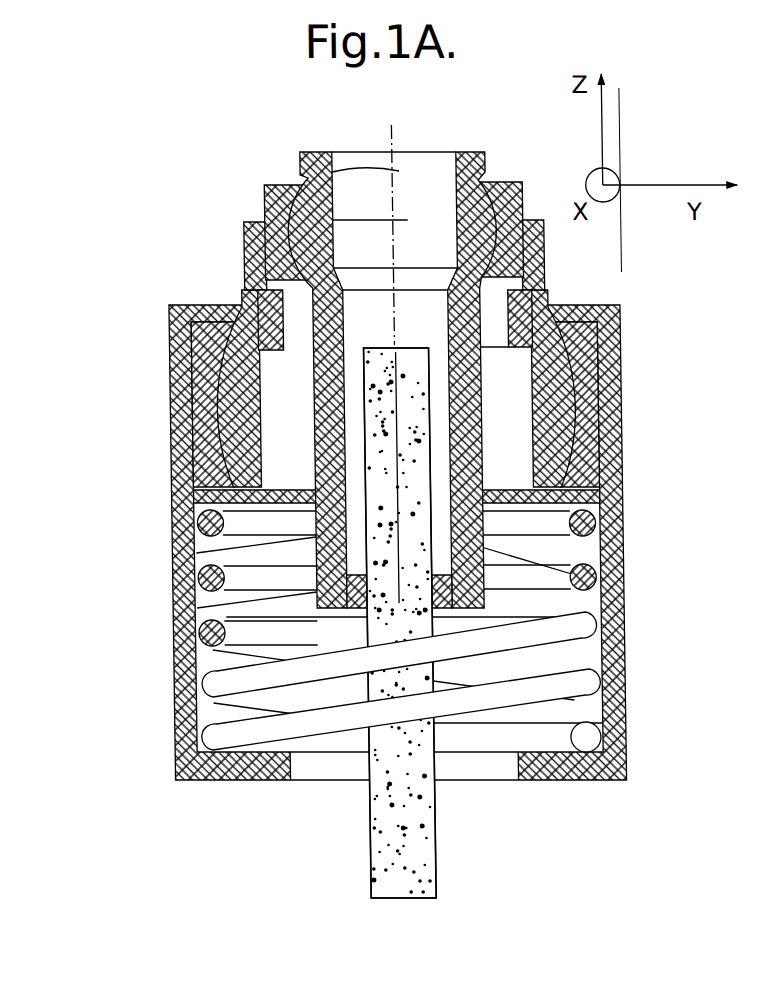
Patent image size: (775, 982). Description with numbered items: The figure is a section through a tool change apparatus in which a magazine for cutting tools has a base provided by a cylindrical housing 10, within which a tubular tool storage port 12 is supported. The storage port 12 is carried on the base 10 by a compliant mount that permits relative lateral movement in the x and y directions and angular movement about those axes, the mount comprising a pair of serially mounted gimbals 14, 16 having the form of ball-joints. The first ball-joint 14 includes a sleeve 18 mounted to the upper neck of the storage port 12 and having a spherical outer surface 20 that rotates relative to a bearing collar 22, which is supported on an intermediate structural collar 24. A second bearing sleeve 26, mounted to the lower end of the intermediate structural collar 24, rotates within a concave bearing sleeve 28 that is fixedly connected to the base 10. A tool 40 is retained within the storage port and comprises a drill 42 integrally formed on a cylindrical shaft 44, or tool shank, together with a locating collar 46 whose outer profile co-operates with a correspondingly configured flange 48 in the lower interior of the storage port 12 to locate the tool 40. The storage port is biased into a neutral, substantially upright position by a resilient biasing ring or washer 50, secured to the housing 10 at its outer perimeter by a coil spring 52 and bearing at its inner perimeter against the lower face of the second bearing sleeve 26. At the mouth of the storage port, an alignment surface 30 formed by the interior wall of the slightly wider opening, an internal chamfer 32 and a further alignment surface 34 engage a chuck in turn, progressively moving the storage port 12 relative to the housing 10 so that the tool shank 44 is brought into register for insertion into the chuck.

The cylindrical housing 10 is at (185, 722).
The tool storage port 12 is at (309, 607).
The gimbal 14 is at (265, 200).
The gimbal 16 is at (207, 442).
The sleeve 18 is at (383, 173).
The spherical outer surface 20 is at (491, 182).
The bearing collar 22 is at (533, 272).
The intermediate structural collar 24 is at (256, 253).
The second bearing sleeve 26 is at (245, 368).
The concave bearing sleeve 28 is at (212, 418).
The alignment surface 30 is at (388, 221).
The internal chamfer 32 is at (381, 298).
The alignment surface 34 is at (199, 548).
The tool 40 is at (342, 852).
The drill 42 is at (418, 812).
The cylindrical shaft 44 is at (482, 586).
The locating collar 46 is at (453, 634).
The flange 48 is at (350, 478).
The resilient biasing ring 50 is at (418, 538).
The coil spring 52 is at (580, 752).